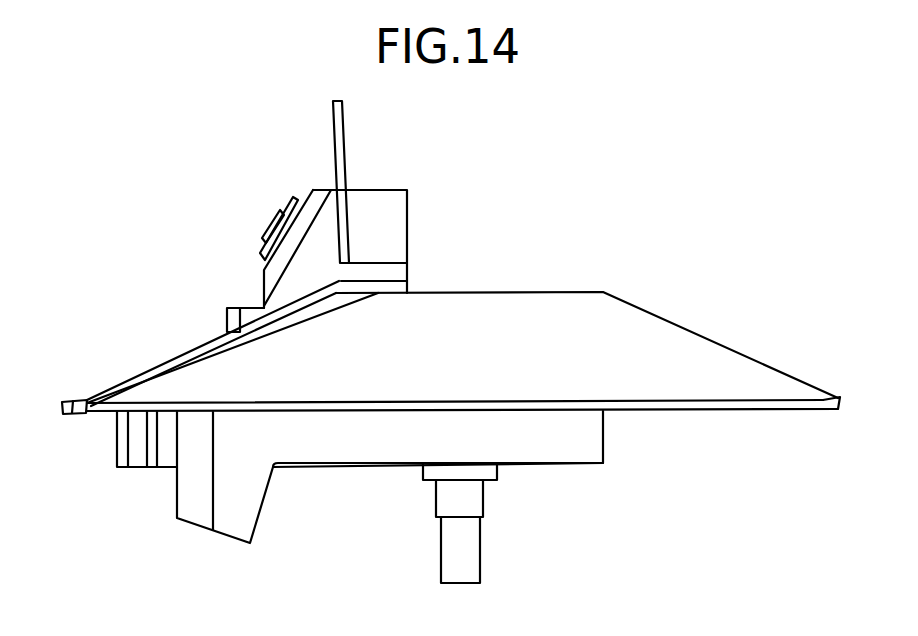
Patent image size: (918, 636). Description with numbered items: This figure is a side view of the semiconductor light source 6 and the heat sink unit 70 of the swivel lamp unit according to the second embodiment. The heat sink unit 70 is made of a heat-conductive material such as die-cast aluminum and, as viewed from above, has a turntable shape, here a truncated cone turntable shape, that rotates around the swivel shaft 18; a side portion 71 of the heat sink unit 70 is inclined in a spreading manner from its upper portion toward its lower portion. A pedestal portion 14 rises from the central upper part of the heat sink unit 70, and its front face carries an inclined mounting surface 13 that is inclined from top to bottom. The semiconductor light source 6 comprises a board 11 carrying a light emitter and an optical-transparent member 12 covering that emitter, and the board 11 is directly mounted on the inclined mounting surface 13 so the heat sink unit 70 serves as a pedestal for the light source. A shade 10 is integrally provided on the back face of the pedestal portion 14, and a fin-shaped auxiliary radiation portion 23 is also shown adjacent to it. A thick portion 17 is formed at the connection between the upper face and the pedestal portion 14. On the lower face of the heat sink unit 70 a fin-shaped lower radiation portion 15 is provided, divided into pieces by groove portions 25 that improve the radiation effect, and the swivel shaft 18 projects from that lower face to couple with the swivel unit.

The semiconductor light source 6 is at (255, 212).
The shade 10 is at (344, 120).
The board 11 is at (262, 243).
The optical-transparent member 12 is at (271, 218).
The inclined mounting surface 13 is at (312, 189).
The pedestal portion 14 is at (324, 227).
The lower radiation portion 15 is at (192, 482).
The thick portion 17 is at (245, 307).
The swivel shaft 18 is at (482, 553).
The auxiliary radiation portion 23 is at (386, 227).
The groove portions 25 is at (204, 347).
The heat sink unit 70 is at (593, 292).
The side portion 71 is at (68, 400).